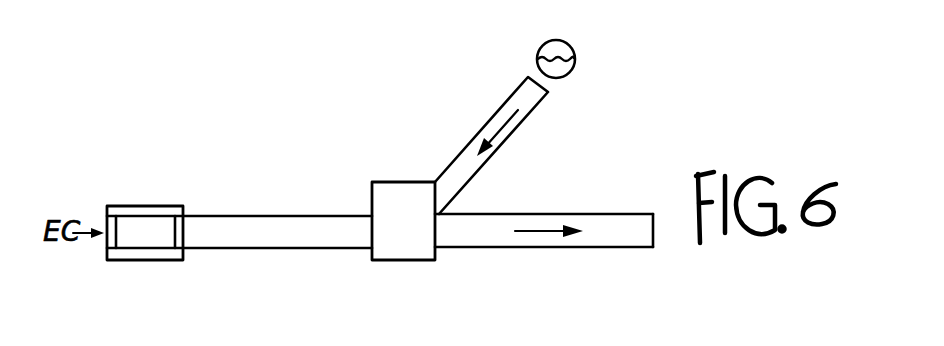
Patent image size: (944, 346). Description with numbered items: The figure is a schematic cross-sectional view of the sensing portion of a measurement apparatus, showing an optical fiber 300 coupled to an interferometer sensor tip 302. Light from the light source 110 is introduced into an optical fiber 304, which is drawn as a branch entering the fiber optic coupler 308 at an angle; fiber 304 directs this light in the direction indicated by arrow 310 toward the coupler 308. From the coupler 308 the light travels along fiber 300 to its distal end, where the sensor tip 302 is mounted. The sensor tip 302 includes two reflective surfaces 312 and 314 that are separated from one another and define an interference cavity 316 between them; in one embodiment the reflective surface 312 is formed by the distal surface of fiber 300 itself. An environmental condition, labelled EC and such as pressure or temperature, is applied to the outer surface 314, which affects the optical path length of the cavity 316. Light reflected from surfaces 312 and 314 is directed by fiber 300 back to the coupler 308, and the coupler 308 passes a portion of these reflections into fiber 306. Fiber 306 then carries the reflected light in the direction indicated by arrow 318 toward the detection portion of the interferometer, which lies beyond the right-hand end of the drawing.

The light source 110 is at (570, 46).
The optical fiber 300 is at (330, 215).
The interferometer sensor tip 302 is at (155, 191).
The optical fiber 304 is at (528, 90).
The fiber 306 is at (535, 213).
The fiber optic coupler 308 is at (418, 261).
The arrow 310 is at (513, 117).
The reflective surface 312 is at (176, 238).
The reflective surface 314 is at (108, 243).
The interference cavity 316 is at (147, 235).
The arrow 318 is at (543, 230).